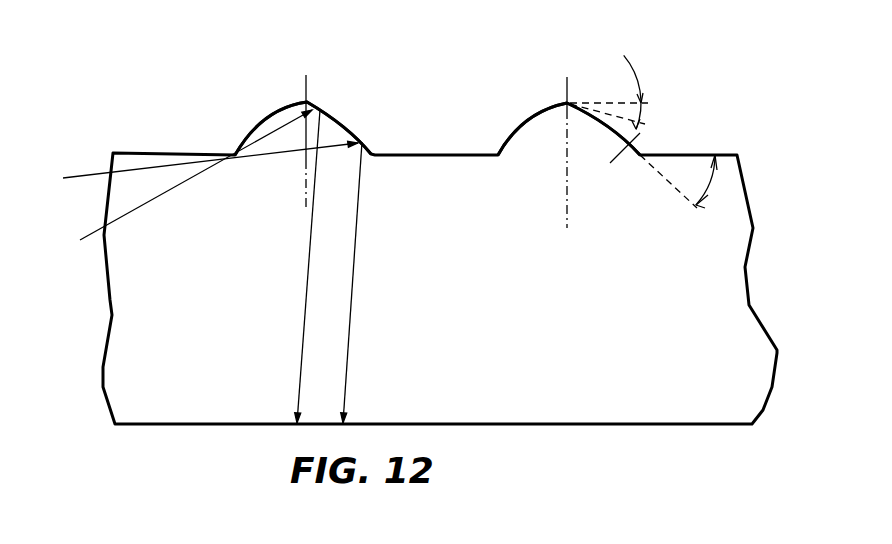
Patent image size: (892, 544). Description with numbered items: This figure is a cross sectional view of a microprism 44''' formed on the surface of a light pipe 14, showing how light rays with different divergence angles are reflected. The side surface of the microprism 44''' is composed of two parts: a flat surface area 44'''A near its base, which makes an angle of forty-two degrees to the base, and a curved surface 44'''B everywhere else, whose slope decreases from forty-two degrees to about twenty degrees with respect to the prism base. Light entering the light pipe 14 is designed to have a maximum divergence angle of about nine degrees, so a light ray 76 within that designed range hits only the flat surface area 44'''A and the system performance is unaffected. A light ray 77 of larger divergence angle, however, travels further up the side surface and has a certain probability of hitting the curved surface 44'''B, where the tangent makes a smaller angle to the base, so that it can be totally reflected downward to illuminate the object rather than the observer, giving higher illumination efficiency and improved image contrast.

The light pipe 14 is at (518, 455).
The microprism 44''' is at (334, 137).
The flat surface area 44'''A is at (662, 155).
The curved surface 44'''B is at (598, 133).
The light ray 76 is at (95, 173).
The light ray 77 is at (83, 242).